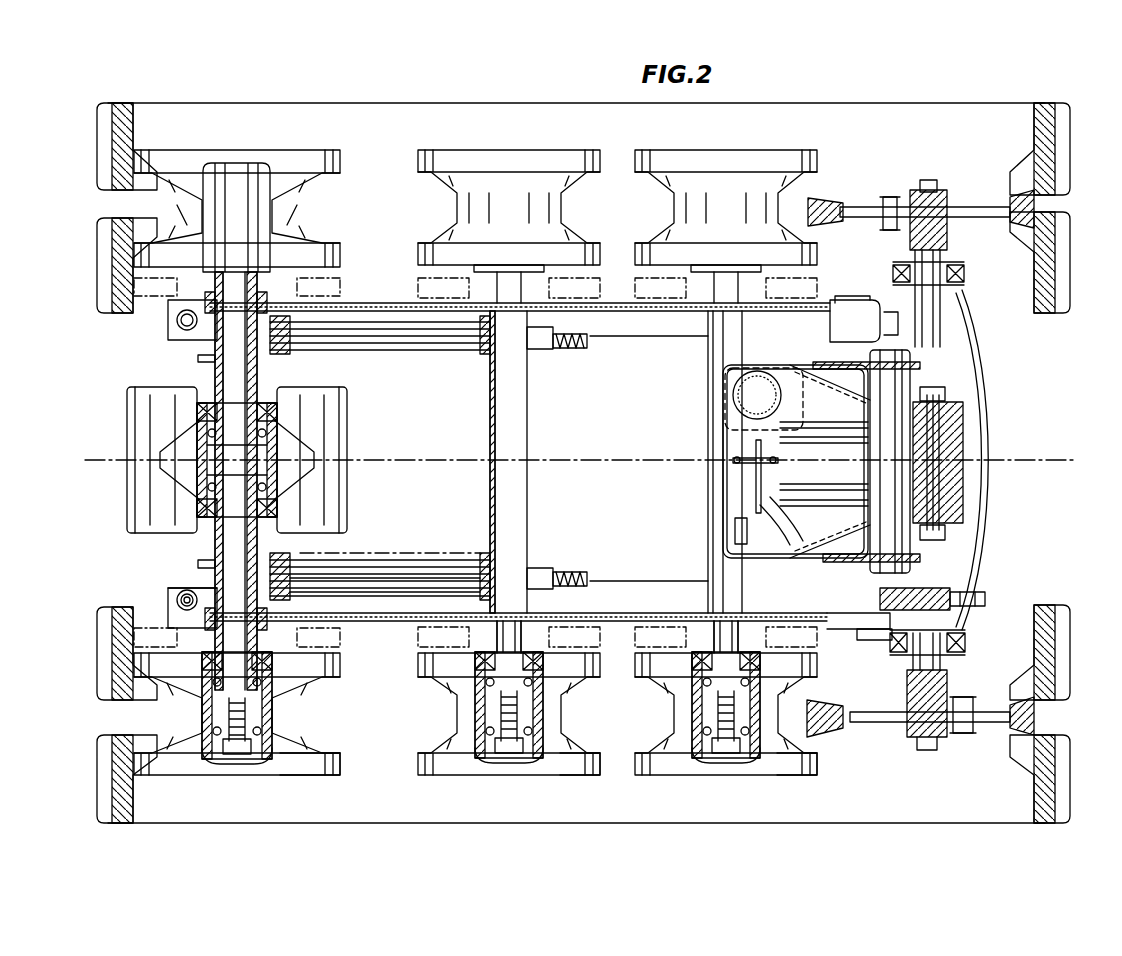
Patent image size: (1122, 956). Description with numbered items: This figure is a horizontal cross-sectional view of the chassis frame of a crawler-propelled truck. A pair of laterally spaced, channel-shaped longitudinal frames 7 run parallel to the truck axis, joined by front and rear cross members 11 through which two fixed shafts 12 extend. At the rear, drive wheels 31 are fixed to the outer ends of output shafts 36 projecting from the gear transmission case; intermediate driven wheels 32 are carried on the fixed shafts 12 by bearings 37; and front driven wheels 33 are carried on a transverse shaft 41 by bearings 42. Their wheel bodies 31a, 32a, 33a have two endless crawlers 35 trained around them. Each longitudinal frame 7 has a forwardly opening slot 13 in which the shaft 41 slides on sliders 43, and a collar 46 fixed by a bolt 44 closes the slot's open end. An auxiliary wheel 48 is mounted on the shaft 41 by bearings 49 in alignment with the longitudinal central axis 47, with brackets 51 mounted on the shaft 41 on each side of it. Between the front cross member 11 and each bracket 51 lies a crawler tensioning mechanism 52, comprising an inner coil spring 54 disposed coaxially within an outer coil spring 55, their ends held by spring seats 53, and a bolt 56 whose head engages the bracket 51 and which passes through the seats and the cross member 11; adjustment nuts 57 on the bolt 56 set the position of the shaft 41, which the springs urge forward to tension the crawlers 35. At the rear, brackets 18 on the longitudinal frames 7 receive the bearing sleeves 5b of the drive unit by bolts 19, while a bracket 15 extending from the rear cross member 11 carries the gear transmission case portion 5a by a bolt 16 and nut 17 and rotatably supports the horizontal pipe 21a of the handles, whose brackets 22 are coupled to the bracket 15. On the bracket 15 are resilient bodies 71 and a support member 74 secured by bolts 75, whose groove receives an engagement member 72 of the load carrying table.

The crawler 35 is at (413, 103).
The front driven wheel 33 is at (276, 150).
The wheel body 33a is at (309, 775).
The intermediate driven wheel 32 is at (531, 150).
The wheel body 32a is at (586, 775).
The drive wheel 31 is at (855, 206).
The wheel body 31a is at (1000, 729).
The output shaft 36 is at (946, 251).
The bracket 18 is at (860, 298).
The bracket 15 is at (805, 365).
The bracket 22 is at (812, 590).
The bolt 16 is at (928, 397).
The gear transmission case portion 5a is at (986, 400).
The horizontal pipe 21a is at (965, 414).
The slider 43 is at (207, 294).
The slot 13 is at (168, 312).
The bracket 51 is at (198, 358).
The shaft 41 is at (218, 395).
The bearing 49 is at (273, 432).
The longitudinal central axis 47 is at (92, 461).
The auxiliary wheel 48 is at (127, 499).
The crawler tensioning mechanism 52 is at (423, 374).
The cross member 11 is at (528, 402).
The longitudinal frame 7 is at (624, 338).
The resilient body 71 is at (734, 395).
The engagement member 72 is at (755, 446).
The support member 74 is at (755, 470).
The bolt 75 is at (786, 531).
The nut 17 is at (941, 530).
The bearing sleeve 5b is at (935, 590).
The outer coil spring 55 is at (415, 552).
The spring seat 53 is at (483, 556).
The bolt 56 is at (352, 566).
The inner coil spring 54 is at (386, 560).
The adjustment nut 57 is at (539, 568).
The fixed shaft 12 is at (521, 648).
The bolt 19 is at (986, 599).
The collar 46 is at (176, 590).
The bolt 44 is at (177, 600).
The bearing 42 is at (273, 676).
The bearing 37 is at (545, 682).